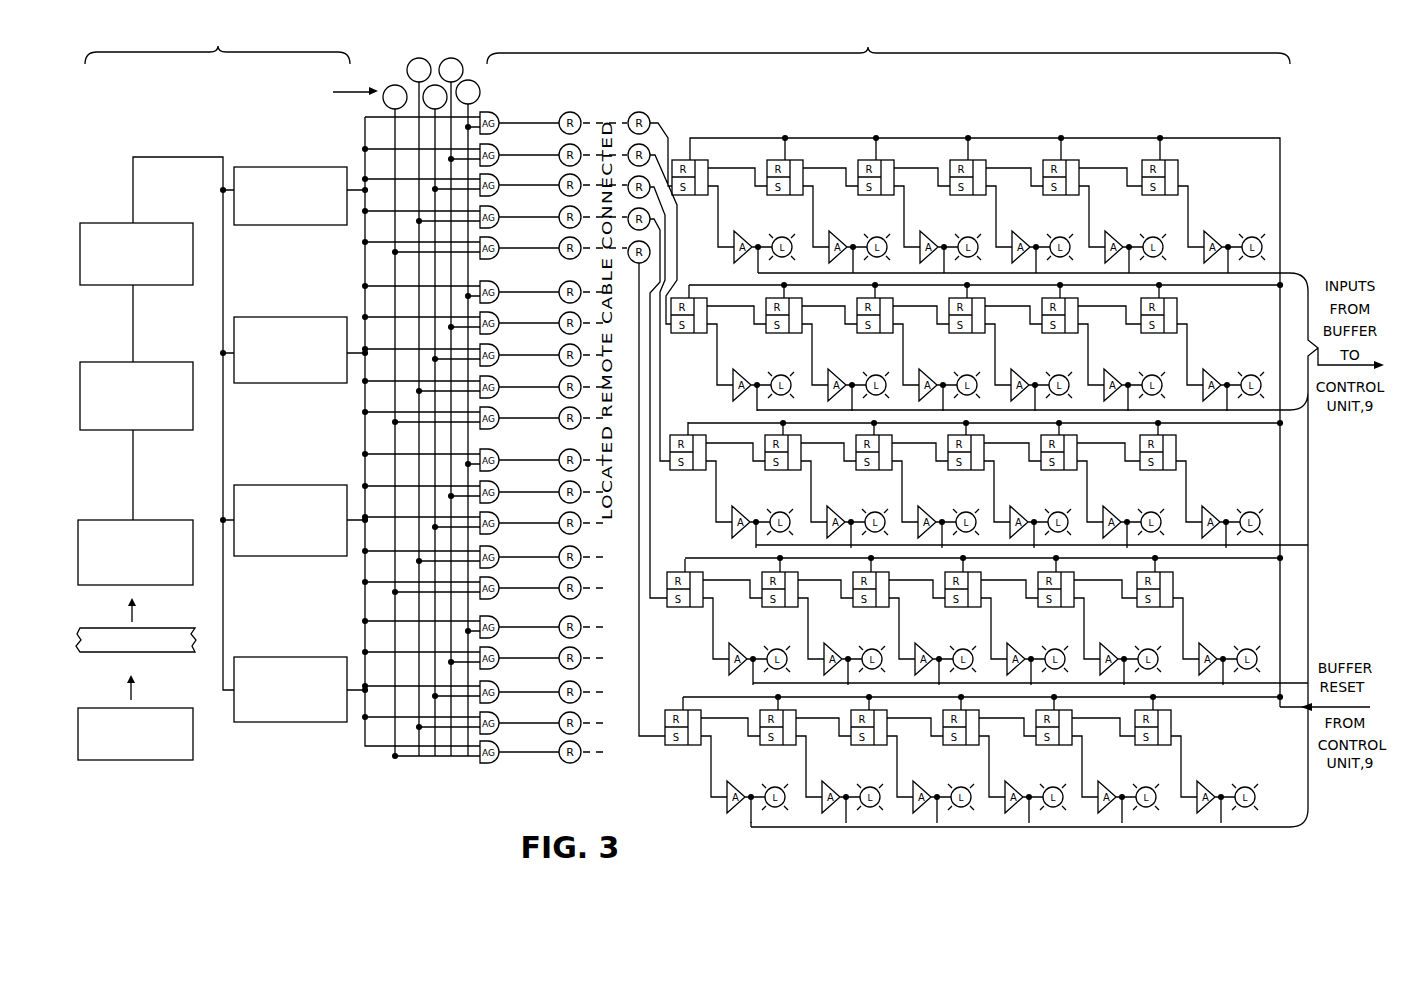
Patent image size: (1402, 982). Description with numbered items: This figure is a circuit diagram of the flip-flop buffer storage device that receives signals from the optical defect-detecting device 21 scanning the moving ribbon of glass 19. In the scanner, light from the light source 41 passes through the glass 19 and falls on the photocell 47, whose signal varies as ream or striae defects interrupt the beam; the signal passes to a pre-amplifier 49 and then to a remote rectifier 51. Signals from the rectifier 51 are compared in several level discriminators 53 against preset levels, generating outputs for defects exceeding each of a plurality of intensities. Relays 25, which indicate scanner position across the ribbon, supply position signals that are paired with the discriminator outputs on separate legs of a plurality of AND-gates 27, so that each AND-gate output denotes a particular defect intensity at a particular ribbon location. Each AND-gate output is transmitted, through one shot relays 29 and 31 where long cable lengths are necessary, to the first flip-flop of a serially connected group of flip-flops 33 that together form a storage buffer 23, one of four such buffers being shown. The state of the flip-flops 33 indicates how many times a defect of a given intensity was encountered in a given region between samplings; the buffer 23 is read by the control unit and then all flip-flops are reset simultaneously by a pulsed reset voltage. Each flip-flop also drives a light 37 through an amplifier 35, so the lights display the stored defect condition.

The ribbon of glass 19 is at (90, 626).
The optical defect-detecting device 21 is at (231, 62).
The storage buffer 23 is at (888, 75).
The relays 25 is at (397, 77).
The AND-gates 27 is at (496, 116).
The one shot relays 29 is at (566, 114).
The one shot relays 31 is at (652, 110).
The flip-flops 33 is at (766, 162).
The amplifier 35 is at (1212, 374).
The lights 37 is at (1248, 376).
The light source 41 is at (88, 706).
The photocell 47 is at (90, 522).
The pre-amplifier 49 is at (88, 368).
The rectifier 51 is at (88, 232).
The discriminators 53 is at (249, 167).